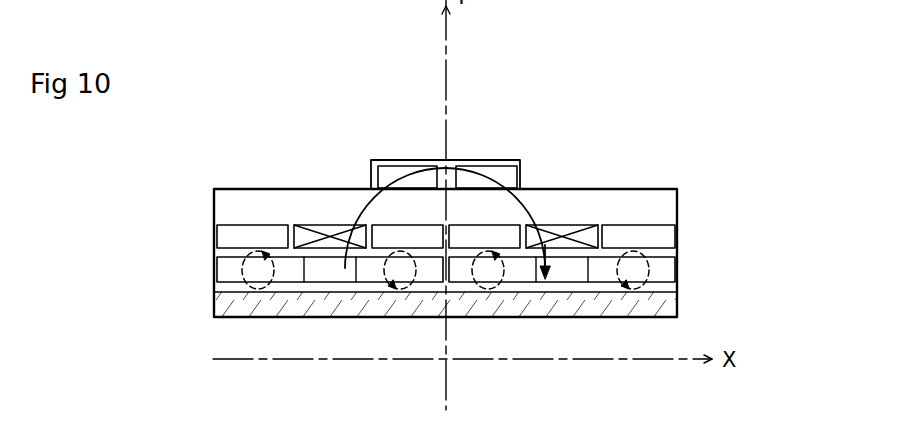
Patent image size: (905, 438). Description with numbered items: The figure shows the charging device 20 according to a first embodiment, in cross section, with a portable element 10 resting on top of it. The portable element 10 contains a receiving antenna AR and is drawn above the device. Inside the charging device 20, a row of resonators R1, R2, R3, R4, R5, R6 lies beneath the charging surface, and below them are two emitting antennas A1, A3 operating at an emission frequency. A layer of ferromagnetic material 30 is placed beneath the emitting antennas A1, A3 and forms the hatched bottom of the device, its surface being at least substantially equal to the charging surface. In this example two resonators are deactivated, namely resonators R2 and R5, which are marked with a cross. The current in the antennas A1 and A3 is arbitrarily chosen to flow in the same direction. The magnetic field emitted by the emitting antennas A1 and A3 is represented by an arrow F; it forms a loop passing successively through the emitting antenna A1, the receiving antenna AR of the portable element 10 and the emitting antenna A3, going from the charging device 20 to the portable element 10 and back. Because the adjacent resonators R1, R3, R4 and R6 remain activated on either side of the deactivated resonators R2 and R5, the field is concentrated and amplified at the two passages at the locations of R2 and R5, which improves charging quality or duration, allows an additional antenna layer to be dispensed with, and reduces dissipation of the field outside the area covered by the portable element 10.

The portable element 10 is at (408, 161).
The charging device 20 is at (665, 203).
The layer of ferromagnetic material 30 is at (665, 302).
The resonator R1 is at (225, 237).
The resonator R2 is at (320, 232).
The resonator R3 is at (390, 238).
The resonator R4 is at (507, 237).
The resonator R5 is at (583, 237).
The resonator R6 is at (665, 238).
The emitting antenna A1 is at (225, 268).
The emitting antenna A3 is at (665, 268).
The receiving antenna AR is at (505, 172).
The arrow F is at (545, 250).